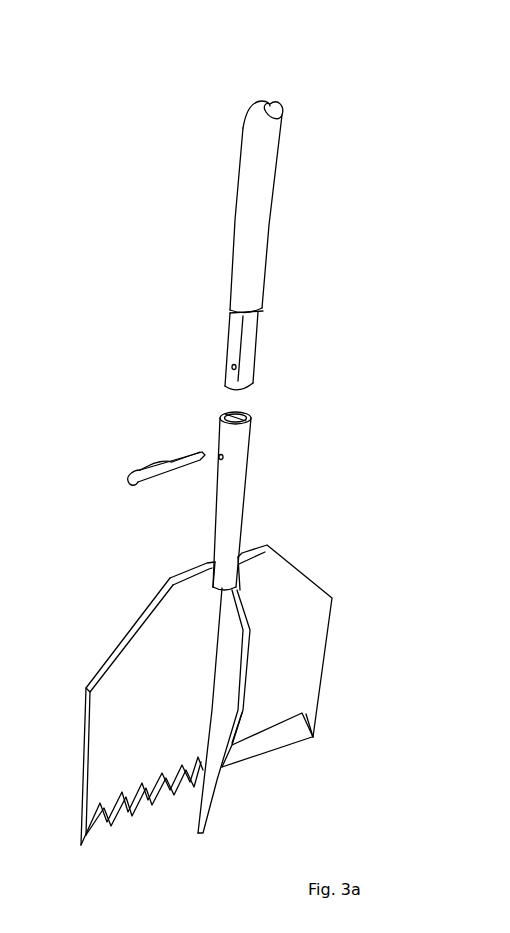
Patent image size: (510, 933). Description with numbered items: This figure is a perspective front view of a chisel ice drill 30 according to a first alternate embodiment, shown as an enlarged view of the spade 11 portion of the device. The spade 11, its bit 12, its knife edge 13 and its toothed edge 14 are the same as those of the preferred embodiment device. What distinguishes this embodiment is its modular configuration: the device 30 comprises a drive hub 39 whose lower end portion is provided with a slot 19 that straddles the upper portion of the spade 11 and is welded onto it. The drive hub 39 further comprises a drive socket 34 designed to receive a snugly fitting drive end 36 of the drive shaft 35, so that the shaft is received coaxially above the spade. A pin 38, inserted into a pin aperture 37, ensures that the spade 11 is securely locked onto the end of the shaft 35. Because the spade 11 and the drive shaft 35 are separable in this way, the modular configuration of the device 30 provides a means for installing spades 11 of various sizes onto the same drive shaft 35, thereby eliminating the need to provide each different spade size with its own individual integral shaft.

The chisel ice drill 30 is at (162, 176).
The drive shaft 35 is at (243, 128).
The drive end 36 is at (230, 333).
The pin aperture 37 is at (239, 378).
The drive socket 34 is at (228, 413).
The drive hub 39 is at (228, 540).
The pin 38 is at (135, 467).
The slot 19 is at (207, 574).
The bit 12 is at (227, 687).
The toothed edge 14 is at (113, 805).
The spade 11 is at (312, 582).
The knife edge 13 is at (292, 728).